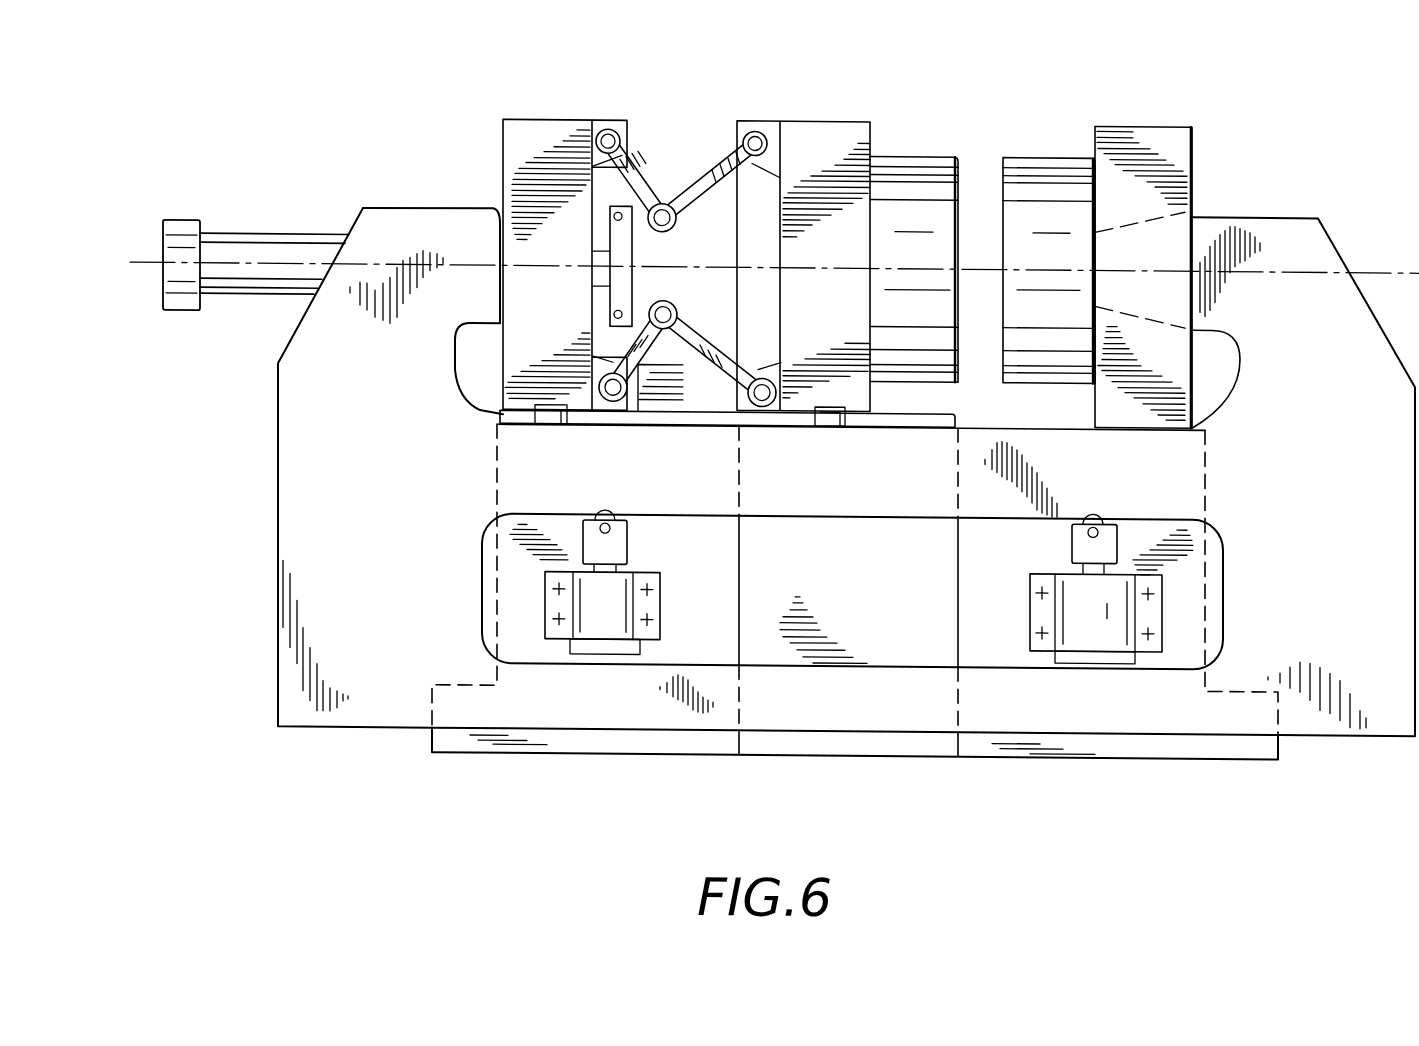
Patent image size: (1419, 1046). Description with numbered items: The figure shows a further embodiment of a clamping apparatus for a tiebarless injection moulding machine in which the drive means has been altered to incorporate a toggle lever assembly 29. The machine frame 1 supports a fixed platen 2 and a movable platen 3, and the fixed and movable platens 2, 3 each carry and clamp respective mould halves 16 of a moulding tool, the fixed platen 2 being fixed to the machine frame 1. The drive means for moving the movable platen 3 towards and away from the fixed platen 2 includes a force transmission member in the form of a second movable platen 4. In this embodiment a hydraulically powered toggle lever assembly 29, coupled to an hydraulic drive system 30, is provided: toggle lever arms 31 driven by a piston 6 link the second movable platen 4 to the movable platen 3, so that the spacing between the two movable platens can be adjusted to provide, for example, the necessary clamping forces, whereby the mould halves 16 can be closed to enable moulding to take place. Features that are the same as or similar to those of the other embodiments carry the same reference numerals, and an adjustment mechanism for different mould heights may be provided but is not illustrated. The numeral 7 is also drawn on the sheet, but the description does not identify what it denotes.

The machine frame 1 is at (1140, 743).
The fixed platen 2 is at (1133, 170).
The movable platen 3 is at (800, 149).
The second movable platen 4 is at (565, 121).
The piston 6 is at (600, 274).
The machine frame 7 is at (277, 636).
The mould halves 16 is at (1032, 181).
The toggle lever assembly 29 is at (648, 142).
The hydraulic drive system 30 is at (245, 251).
The toggle lever arms 31 is at (657, 204).